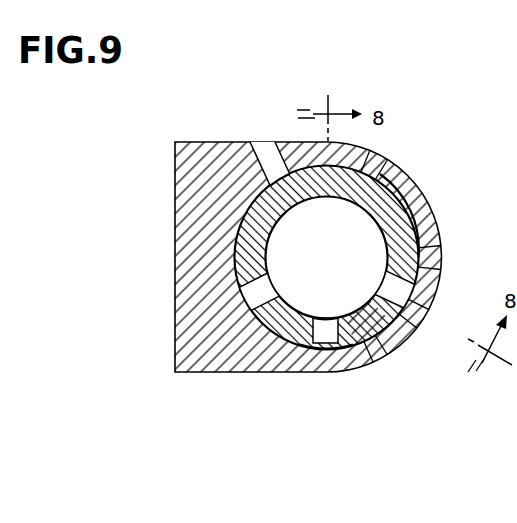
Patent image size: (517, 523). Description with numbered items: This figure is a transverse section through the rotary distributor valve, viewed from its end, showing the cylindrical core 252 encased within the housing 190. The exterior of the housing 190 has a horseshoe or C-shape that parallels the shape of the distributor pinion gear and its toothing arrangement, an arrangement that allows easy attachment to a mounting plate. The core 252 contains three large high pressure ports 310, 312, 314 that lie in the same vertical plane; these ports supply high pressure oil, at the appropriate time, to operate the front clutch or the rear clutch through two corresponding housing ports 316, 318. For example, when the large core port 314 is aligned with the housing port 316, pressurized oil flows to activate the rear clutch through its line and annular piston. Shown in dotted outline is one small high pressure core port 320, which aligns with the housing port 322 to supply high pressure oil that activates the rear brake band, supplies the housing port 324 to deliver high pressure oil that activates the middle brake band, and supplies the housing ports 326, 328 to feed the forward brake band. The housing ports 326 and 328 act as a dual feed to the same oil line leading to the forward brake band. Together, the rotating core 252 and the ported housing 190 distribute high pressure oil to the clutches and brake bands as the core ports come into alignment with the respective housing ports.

The rotary distributor valve housing 190 is at (175, 141).
The core 252 is at (245, 257).
The housing port 318 is at (262, 157).
The large high pressure port 310 is at (258, 293).
The large high pressure port 312 is at (333, 343).
The large core port 314 is at (388, 293).
The small high pressure core port 320 is at (364, 318).
The housing port 324 is at (436, 258).
The housing port 316 is at (418, 312).
The housing port 322 is at (380, 352).
The housing port 326 is at (427, 195).
The housing port 328 is at (376, 157).